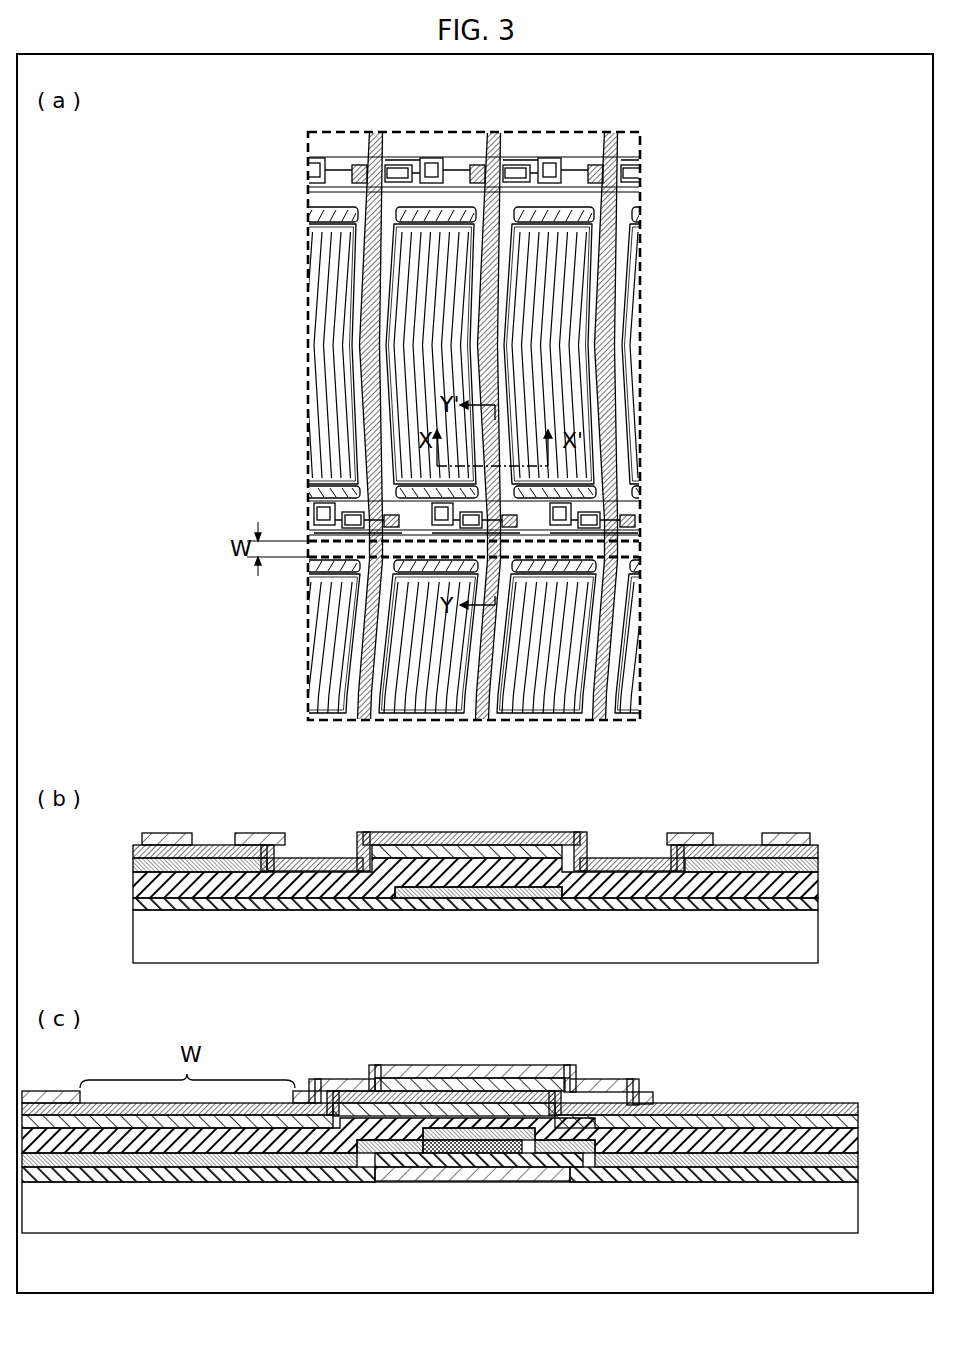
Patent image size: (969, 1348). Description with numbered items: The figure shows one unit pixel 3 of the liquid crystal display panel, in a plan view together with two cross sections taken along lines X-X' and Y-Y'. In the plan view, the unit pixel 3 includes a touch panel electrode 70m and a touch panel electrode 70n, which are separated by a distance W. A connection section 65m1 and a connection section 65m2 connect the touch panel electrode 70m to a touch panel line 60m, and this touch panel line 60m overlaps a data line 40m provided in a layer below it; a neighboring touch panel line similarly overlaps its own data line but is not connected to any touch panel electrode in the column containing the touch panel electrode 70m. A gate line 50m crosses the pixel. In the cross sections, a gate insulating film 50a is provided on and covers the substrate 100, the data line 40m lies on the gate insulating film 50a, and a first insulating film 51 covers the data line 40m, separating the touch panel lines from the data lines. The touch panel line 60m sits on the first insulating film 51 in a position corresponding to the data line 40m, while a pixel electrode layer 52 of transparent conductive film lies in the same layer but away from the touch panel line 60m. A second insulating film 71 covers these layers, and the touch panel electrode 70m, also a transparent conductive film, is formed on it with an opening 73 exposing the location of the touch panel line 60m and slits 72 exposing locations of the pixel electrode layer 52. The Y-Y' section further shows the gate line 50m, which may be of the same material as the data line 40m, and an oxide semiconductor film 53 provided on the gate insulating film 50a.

The unit pixel 3 is at (668, 136).
The touch panel electrode 70m is at (308, 248).
The touch panel electrode 70n is at (308, 638).
The connection section 65m2 is at (479, 172).
The connection section 65m1 is at (512, 520).
The gate line 50m is at (625, 519).
The touch panel line 60m is at (483, 688).
The data line 40m is at (888, 1168).
The slits 72 is at (235, 828).
The opening 73 is at (598, 828).
The second insulating film 71 is at (818, 851).
The pixel electrode layer 52 is at (818, 864).
The first insulating film 51 is at (820, 886).
The gate insulating film 50a is at (818, 905).
The substrate 100 is at (818, 935).
The oxide semiconductor film 53 is at (447, 1158).